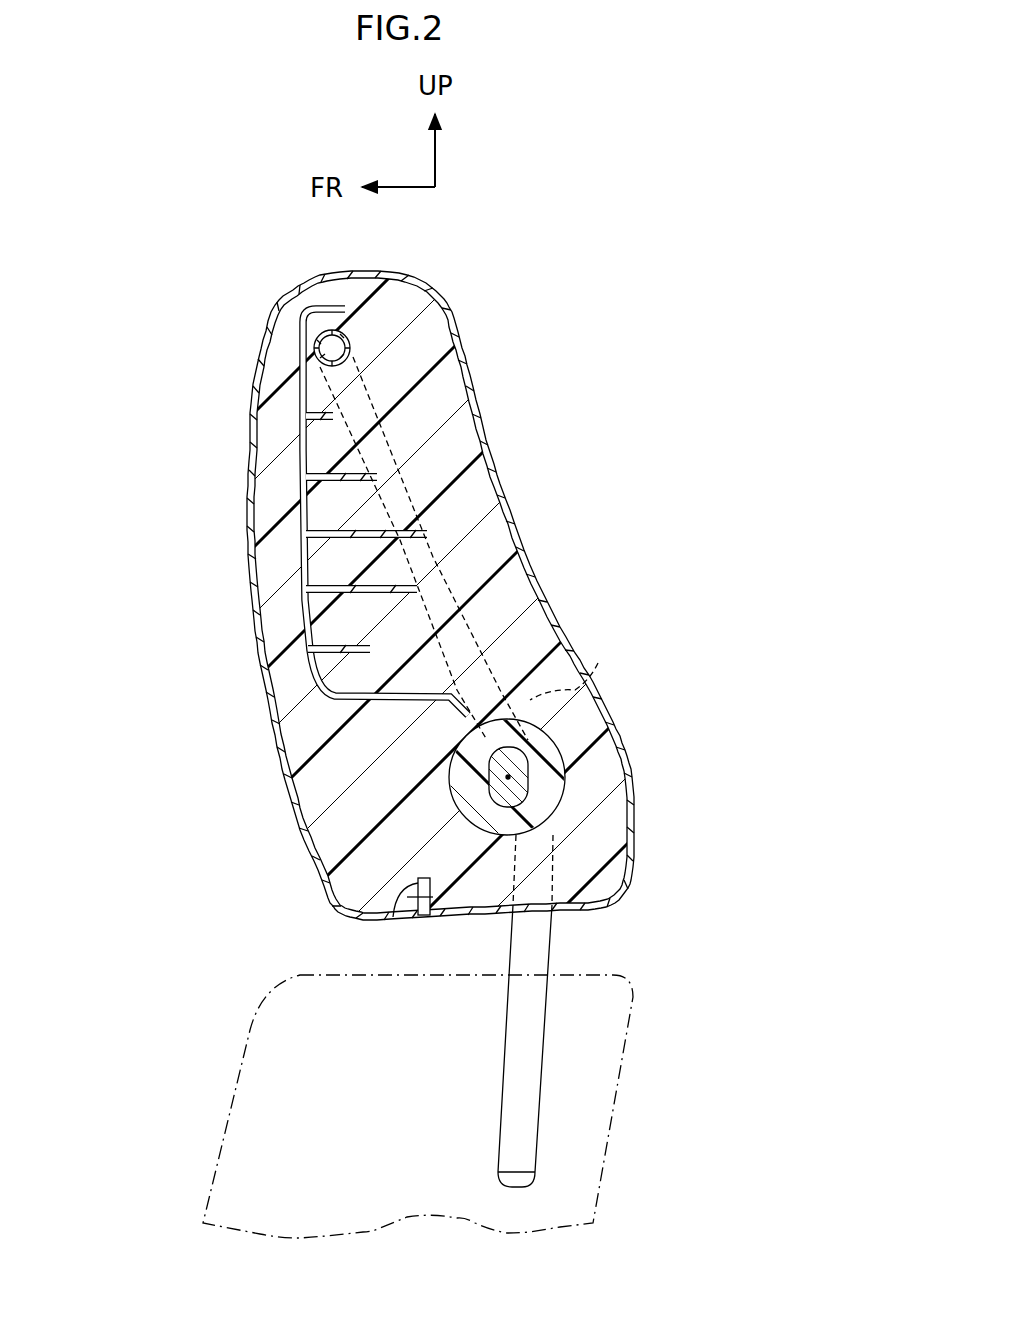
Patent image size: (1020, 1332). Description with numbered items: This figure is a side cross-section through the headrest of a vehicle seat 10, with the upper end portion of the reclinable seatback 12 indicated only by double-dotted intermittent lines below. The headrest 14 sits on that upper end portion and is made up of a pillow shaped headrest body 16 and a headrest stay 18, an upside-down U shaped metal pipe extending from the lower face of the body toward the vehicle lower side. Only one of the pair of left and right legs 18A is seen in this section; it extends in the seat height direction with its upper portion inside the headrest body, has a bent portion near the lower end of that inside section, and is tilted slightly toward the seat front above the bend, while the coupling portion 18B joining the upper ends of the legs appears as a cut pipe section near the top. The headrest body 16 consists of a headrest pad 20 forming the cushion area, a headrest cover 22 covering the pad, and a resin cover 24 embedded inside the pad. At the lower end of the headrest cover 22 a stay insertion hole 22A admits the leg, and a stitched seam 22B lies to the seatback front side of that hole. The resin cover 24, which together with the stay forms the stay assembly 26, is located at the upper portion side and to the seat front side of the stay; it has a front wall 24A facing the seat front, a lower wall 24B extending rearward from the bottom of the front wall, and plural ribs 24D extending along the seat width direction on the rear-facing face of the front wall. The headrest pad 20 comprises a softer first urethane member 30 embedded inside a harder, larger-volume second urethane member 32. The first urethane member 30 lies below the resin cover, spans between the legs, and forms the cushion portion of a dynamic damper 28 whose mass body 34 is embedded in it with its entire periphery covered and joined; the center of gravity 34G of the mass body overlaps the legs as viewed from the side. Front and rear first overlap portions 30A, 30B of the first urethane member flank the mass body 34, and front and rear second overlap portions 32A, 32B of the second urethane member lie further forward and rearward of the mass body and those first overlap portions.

The vehicle seat 10 is at (645, 293).
The seatback 12 is at (648, 975).
The headrest 14 is at (145, 382).
The headrest body 16 is at (228, 440).
The headrest stay 18 is at (477, 746).
The leg 18A is at (545, 937).
The coupling portion 18B is at (347, 378).
The headrest pad 20 is at (275, 639).
The headrest cover 22 is at (258, 578).
The stay insertion hole 22A is at (507, 913).
The stitched seam 22B is at (398, 918).
The resin cover 24 is at (381, 515).
The front wall 24A is at (283, 517).
The lower wall 24B is at (300, 698).
The rib 24D is at (400, 560).
The stay assembly 26 is at (432, 487).
The dynamic damper 28 is at (600, 838).
The first urethane member 30 is at (533, 749).
The first overlap portion 30A is at (460, 768).
The first overlap portion 30B is at (567, 740).
The second urethane member 32 is at (548, 637).
The second overlap portion 32A is at (303, 795).
The second overlap portion 32B is at (578, 803).
The mass body 34 is at (535, 777).
The center of gravity 34G is at (590, 669).